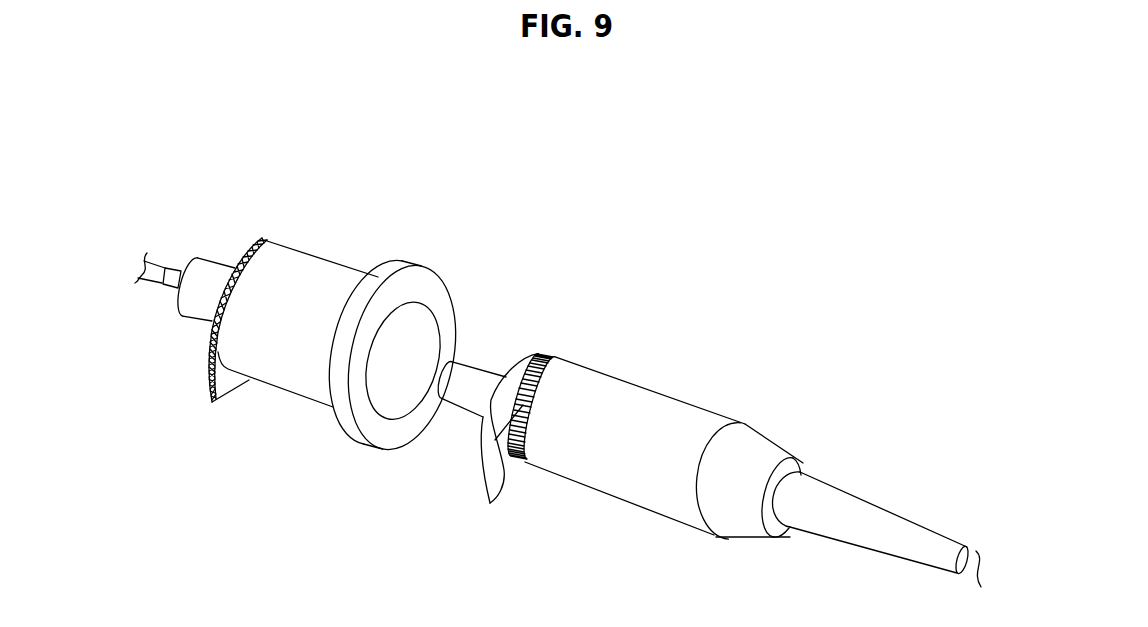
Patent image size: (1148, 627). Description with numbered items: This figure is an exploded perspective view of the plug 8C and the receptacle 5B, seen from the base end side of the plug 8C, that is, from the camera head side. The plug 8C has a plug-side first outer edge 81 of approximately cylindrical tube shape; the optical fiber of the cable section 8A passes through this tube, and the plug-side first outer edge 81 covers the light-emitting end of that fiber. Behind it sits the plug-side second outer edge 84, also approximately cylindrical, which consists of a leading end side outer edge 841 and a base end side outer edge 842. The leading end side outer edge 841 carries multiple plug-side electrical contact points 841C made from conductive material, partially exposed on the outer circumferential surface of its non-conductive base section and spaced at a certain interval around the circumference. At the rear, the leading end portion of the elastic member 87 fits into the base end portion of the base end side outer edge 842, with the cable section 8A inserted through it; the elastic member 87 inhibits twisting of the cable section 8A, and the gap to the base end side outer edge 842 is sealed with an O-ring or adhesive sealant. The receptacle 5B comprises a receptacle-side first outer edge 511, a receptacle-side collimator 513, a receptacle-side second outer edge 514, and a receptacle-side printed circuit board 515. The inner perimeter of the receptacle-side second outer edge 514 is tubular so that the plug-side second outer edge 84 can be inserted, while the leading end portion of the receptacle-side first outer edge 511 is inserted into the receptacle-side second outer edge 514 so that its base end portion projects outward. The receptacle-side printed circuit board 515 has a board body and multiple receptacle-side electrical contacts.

The receptacle 5B is at (374, 150).
The receptacle-side collimator 513 is at (173, 270).
The receptacle-side first outer edge 511 is at (213, 268).
The receptacle-side printed circuit board 515 is at (260, 241).
The receptacle-side second outer edge 514 is at (318, 257).
The plug 8C is at (730, 254).
The plug-side first outer edge 81 is at (494, 375).
The plug-side second outer edge 84 is at (707, 298).
The leading end side outer edge 841 is at (556, 364).
The plug-side electrical contact points 841C is at (489, 505).
The base end side outer edge 842 is at (640, 388).
The elastic member 87 is at (823, 497).
The cable section 8A is at (973, 553).